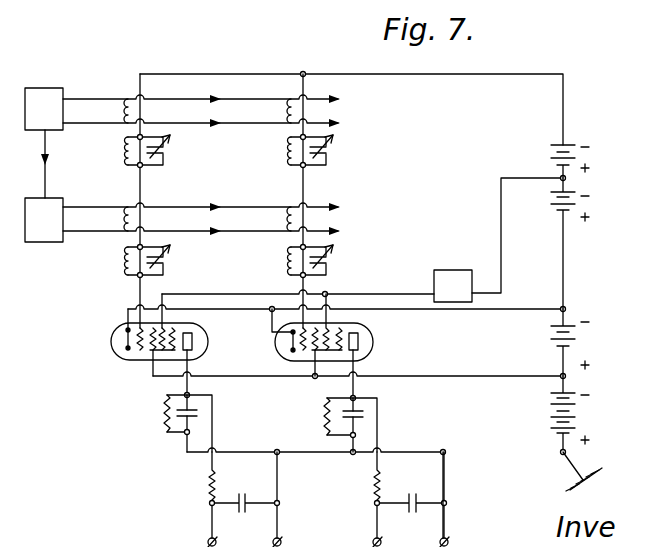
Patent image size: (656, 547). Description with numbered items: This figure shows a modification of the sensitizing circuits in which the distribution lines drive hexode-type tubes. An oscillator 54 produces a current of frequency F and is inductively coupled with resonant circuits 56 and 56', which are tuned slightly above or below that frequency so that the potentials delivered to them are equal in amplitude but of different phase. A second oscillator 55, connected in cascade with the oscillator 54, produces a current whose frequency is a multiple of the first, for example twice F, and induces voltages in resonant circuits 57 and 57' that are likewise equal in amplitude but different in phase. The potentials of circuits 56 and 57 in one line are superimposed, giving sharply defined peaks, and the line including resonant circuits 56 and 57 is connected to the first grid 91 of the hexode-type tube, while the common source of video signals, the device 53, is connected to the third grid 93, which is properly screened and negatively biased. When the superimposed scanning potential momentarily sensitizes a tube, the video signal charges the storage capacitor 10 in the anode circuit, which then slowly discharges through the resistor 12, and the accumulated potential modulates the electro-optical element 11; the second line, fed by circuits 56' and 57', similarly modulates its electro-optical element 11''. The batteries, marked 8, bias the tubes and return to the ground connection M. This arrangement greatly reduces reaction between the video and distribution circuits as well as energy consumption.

The oscillator 54 is at (44, 109).
The second oscillator 55 is at (44, 220).
The resonant circuit 56 is at (128, 155).
The resonant circuit 57 is at (129, 265).
The resonant circuit 56' is at (290, 155).
The resonant circuit 57' is at (290, 265).
The device releasing video signals 53 is at (453, 286).
The battery 8 is at (577, 243).
The third grid 93 is at (170, 330).
The first grid 91 is at (135, 352).
The resistor 12 is at (155, 413).
The storage capacitor 10 is at (200, 413).
The electro-optical element 11 is at (245, 499).
The electro-optical element 11'' is at (411, 499).
The ground connection M is at (588, 469).